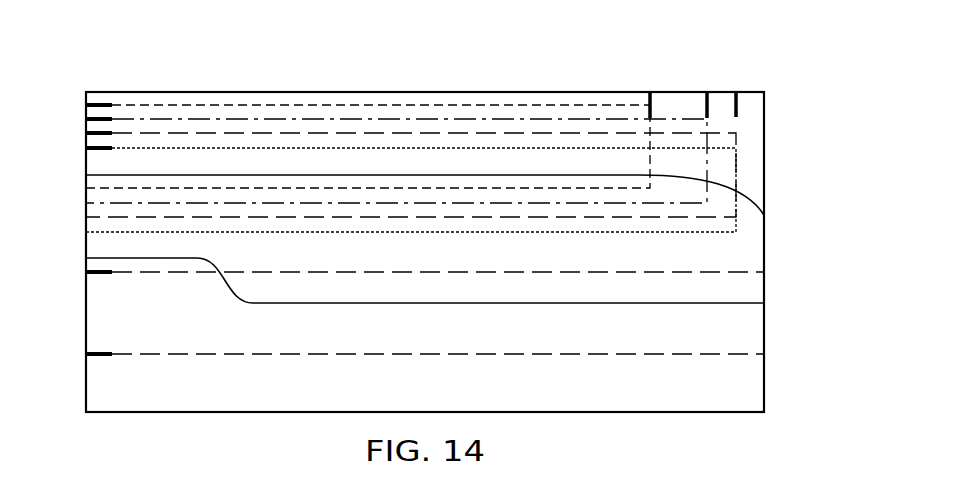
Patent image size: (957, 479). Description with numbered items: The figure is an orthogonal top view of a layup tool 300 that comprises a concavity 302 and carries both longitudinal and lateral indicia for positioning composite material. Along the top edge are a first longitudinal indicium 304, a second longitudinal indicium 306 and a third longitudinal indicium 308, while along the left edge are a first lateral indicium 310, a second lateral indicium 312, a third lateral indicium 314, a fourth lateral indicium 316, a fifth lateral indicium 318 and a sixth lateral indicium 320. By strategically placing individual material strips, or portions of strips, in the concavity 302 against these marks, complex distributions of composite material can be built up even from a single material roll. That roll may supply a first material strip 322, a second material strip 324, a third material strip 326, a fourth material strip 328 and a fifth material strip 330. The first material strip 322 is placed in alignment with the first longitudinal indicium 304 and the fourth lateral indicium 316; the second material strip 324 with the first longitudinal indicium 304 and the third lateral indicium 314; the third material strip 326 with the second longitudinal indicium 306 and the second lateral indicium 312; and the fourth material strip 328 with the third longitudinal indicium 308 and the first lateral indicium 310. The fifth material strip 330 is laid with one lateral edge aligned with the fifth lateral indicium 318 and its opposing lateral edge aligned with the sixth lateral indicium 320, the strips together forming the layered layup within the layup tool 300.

The layup tool 300 is at (765, 330).
The concavity 302 is at (225, 282).
The first longitudinal indicium 304 is at (737, 104).
The second longitudinal indicium 306 is at (718, 93).
The third longitudinal indicium 308 is at (660, 93).
The first lateral indicium 310 is at (97, 103).
The second lateral indicium 312 is at (85, 109).
The third lateral indicium 314 is at (85, 127).
The fourth lateral indicium 316 is at (85, 142).
The fifth lateral indicium 318 is at (97, 272).
The sixth lateral indicium 320 is at (97, 354).
The first material strip 322 is at (737, 223).
The second material strip 324 is at (737, 142).
The third material strip 326 is at (443, 118).
The fourth material strip 328 is at (277, 103).
The fifth material strip 330 is at (452, 356).